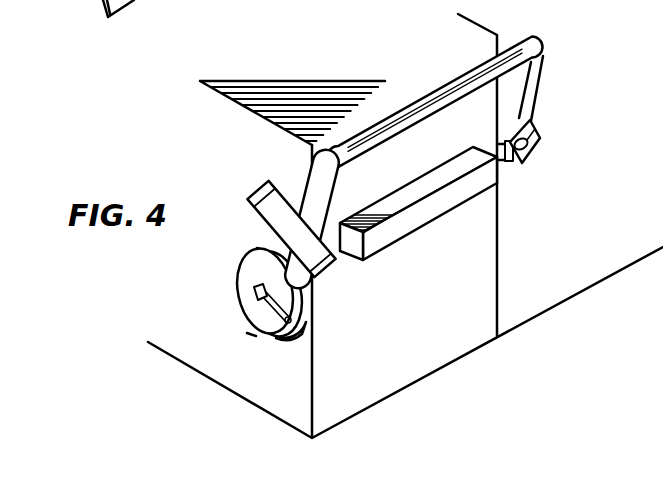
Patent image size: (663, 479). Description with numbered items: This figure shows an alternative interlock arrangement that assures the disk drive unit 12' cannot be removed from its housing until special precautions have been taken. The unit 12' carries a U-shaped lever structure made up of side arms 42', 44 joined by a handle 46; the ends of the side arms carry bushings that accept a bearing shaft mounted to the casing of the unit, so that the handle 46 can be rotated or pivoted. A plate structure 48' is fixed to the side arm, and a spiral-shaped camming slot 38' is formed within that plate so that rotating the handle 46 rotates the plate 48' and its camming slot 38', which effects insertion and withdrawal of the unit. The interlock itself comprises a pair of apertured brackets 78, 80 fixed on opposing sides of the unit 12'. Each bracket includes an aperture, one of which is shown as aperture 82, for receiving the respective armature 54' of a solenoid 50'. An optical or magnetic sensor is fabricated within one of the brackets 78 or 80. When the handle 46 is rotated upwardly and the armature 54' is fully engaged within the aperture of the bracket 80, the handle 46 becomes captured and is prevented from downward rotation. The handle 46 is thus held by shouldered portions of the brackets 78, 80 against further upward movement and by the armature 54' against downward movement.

The disk drive unit 12' is at (405, 226).
The camming slot 38' is at (262, 322).
The side arm 42' is at (556, 88).
The side arm 44 is at (322, 173).
The handle 46 is at (459, 87).
The plate structure 48' is at (248, 292).
The solenoid 50' is at (418, 203).
The armature 54' is at (528, 175).
The apertured bracket 78 is at (255, 195).
The apertured bracket 80 is at (537, 128).
The aperture 82 is at (531, 157).